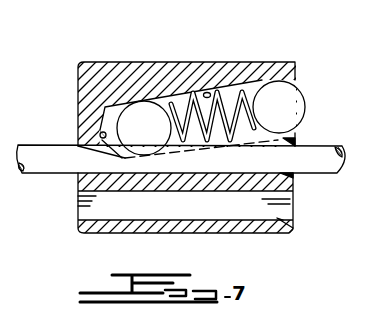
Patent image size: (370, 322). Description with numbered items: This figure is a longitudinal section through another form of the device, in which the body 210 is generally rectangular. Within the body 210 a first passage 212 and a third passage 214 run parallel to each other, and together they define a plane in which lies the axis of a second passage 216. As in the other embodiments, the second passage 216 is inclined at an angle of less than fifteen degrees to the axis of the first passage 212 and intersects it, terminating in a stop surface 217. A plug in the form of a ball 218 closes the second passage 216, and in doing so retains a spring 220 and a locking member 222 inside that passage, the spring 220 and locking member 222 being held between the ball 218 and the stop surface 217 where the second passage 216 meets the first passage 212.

The body 210 is at (97, 72).
The first passage 212 is at (293, 177).
The third passage 214 is at (279, 219).
The second passage 216 is at (206, 93).
The stop surface 217 is at (101, 133).
The ball 218 is at (292, 98).
The spring 220 is at (184, 93).
The locking member 222 is at (130, 120).